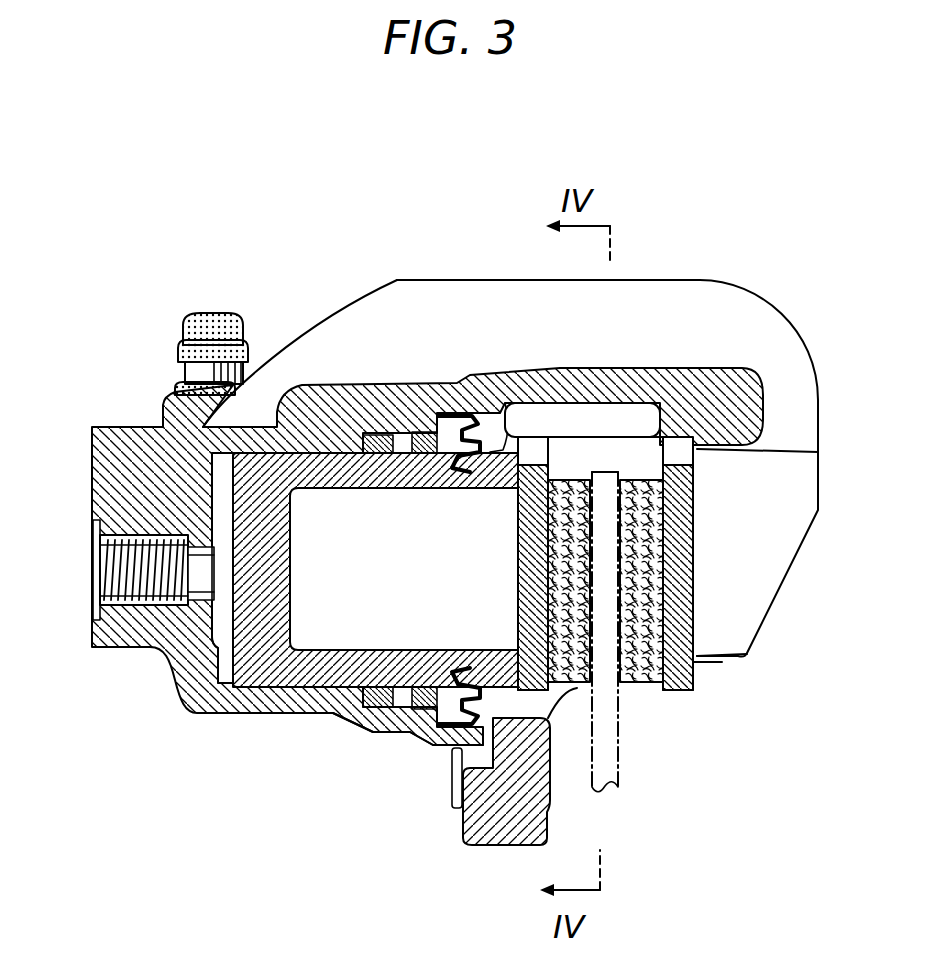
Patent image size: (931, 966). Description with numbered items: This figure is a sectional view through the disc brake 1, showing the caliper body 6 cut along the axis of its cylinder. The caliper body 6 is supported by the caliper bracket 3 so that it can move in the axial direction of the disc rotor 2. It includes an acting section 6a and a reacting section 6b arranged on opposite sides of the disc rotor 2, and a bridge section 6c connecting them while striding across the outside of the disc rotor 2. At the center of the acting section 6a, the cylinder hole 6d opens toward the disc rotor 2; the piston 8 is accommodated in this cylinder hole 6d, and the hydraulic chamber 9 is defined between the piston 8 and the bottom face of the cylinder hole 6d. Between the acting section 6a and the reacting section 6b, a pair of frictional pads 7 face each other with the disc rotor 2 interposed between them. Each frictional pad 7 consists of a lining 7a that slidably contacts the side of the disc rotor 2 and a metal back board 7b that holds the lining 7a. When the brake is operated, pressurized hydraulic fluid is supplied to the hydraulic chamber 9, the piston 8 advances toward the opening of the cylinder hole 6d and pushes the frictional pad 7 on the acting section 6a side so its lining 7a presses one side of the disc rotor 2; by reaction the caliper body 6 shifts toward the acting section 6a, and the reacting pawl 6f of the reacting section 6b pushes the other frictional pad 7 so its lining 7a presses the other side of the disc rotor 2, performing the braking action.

The disc brake 1 is at (690, 200).
The disc rotor 2 is at (605, 793).
The caliper bracket 3 is at (480, 786).
The caliper body 6 is at (392, 266).
The acting section 6a is at (95, 478).
The reacting section 6b is at (797, 476).
The bridge section 6c is at (490, 296).
The cylinder hole 6d is at (310, 690).
The reacting pawl 6f is at (737, 632).
The frictional pad 7 is at (565, 611).
The lining 7a is at (455, 515).
The back board 7b is at (518, 541).
The piston 8 is at (270, 672).
The hydraulic chamber 9 is at (218, 662).